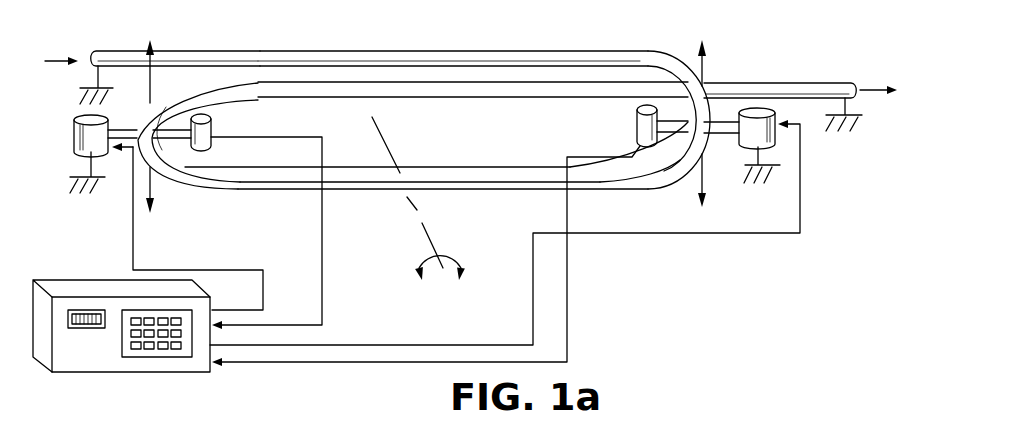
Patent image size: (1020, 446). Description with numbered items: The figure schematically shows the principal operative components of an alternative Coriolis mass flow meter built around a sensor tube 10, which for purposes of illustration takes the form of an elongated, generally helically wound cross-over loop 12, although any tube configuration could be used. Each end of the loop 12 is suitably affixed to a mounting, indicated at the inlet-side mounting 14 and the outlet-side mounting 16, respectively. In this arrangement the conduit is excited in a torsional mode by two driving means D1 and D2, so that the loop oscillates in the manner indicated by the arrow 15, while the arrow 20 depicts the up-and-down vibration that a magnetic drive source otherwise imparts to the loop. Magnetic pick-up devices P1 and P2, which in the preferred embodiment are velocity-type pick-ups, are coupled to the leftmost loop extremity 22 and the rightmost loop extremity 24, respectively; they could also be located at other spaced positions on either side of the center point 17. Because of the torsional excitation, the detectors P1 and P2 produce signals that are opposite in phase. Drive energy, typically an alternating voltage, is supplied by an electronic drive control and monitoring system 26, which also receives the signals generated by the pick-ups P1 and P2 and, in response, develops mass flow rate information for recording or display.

The sensor tube 10 is at (291, 216).
The cross-over loop 12 is at (424, 56).
The mounting 14 is at (134, 51).
The arrow 15 is at (426, 253).
The mounting 16 is at (788, 84).
The center point 17 is at (400, 173).
The arrow 20 is at (160, 168).
The leftmost loop extremity 22 is at (150, 126).
The rightmost loop extremity 24 is at (684, 138).
The electronic drive control and monitoring system 26 is at (108, 373).
The driving means D1 is at (92, 137).
The driving means D2 is at (748, 148).
The magnetic pick-up device P1 is at (213, 122).
The magnetic pick-up device P2 is at (633, 136).